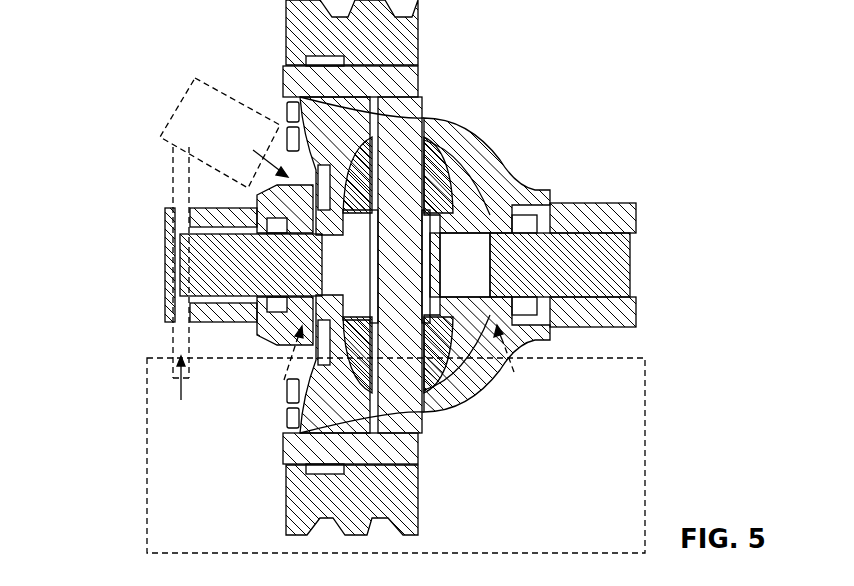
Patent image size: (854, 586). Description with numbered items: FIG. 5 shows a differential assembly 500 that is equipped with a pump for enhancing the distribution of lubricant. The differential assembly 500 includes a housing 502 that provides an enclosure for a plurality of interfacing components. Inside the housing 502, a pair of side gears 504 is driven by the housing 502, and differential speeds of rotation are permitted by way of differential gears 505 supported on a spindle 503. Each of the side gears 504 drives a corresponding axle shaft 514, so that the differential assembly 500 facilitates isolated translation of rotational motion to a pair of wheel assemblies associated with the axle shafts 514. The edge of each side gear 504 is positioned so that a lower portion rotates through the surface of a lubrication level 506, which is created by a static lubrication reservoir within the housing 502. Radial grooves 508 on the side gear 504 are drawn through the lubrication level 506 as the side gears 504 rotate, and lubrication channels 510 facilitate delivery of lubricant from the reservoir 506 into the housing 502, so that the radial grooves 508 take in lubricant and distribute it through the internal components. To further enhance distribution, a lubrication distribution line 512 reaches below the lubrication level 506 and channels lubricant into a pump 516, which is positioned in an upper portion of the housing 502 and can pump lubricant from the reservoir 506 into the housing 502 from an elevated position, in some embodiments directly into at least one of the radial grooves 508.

The differential assembly 500 is at (53, 57).
The housing 502 is at (490, 140).
The spindle 503 is at (412, 125).
The side gears 504 is at (310, 100).
The differential gears 505 is at (440, 165).
The lubrication level 506 is at (150, 455).
The radial grooves 508 is at (322, 200).
The lubrication channels 510 is at (280, 376).
The lubrication distribution line 512 is at (168, 287).
The axle shafts 514 is at (608, 243).
The pump 516 is at (178, 106).